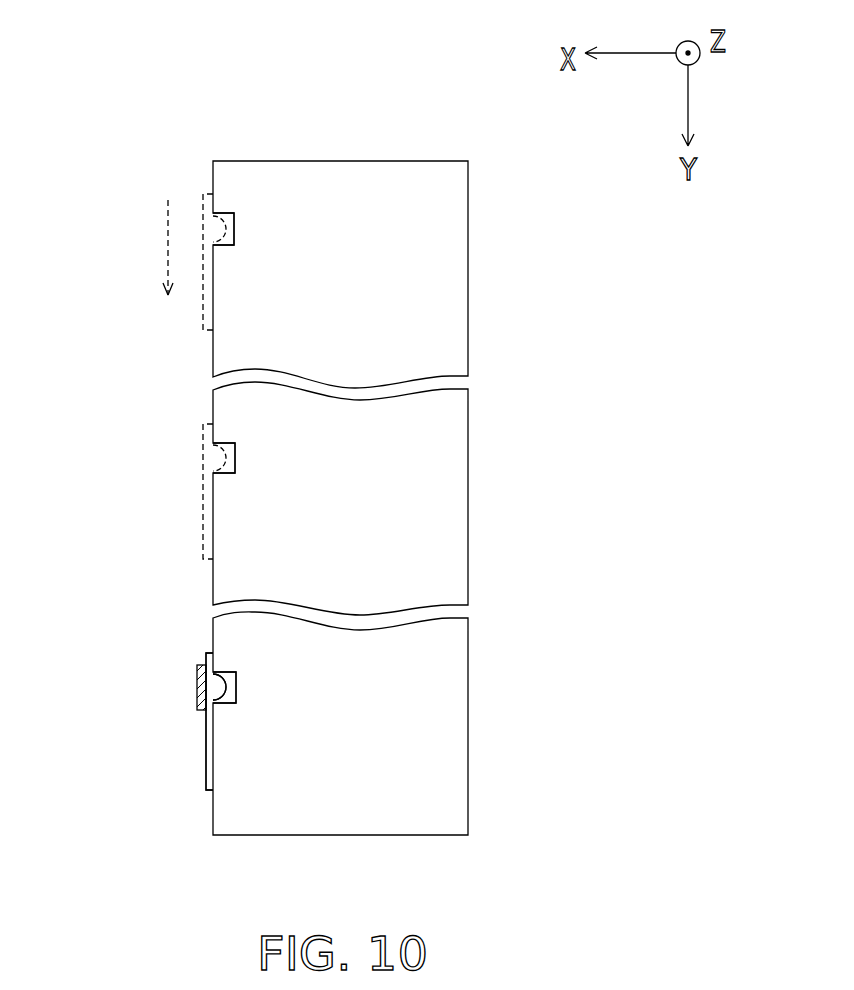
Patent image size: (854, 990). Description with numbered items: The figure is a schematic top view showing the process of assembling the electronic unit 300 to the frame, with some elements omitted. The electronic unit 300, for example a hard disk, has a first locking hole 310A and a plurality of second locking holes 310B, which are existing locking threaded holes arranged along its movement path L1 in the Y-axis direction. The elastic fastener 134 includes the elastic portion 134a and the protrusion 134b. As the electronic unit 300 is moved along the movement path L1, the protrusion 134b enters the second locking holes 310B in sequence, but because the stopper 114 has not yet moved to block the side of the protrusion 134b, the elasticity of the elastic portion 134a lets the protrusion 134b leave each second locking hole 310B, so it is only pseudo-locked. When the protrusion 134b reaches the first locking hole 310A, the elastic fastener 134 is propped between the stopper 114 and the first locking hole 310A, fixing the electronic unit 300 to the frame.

The electronic unit 300 is at (441, 497).
The elastic fastener 134 is at (205, 207).
The elastic portion 134a is at (212, 740).
The protrusion 134b is at (217, 687).
The stopper 114 is at (200, 665).
The first locking hole 310A is at (249, 696).
The second locking hole 310B is at (246, 234).
The movement path L1 is at (147, 247).